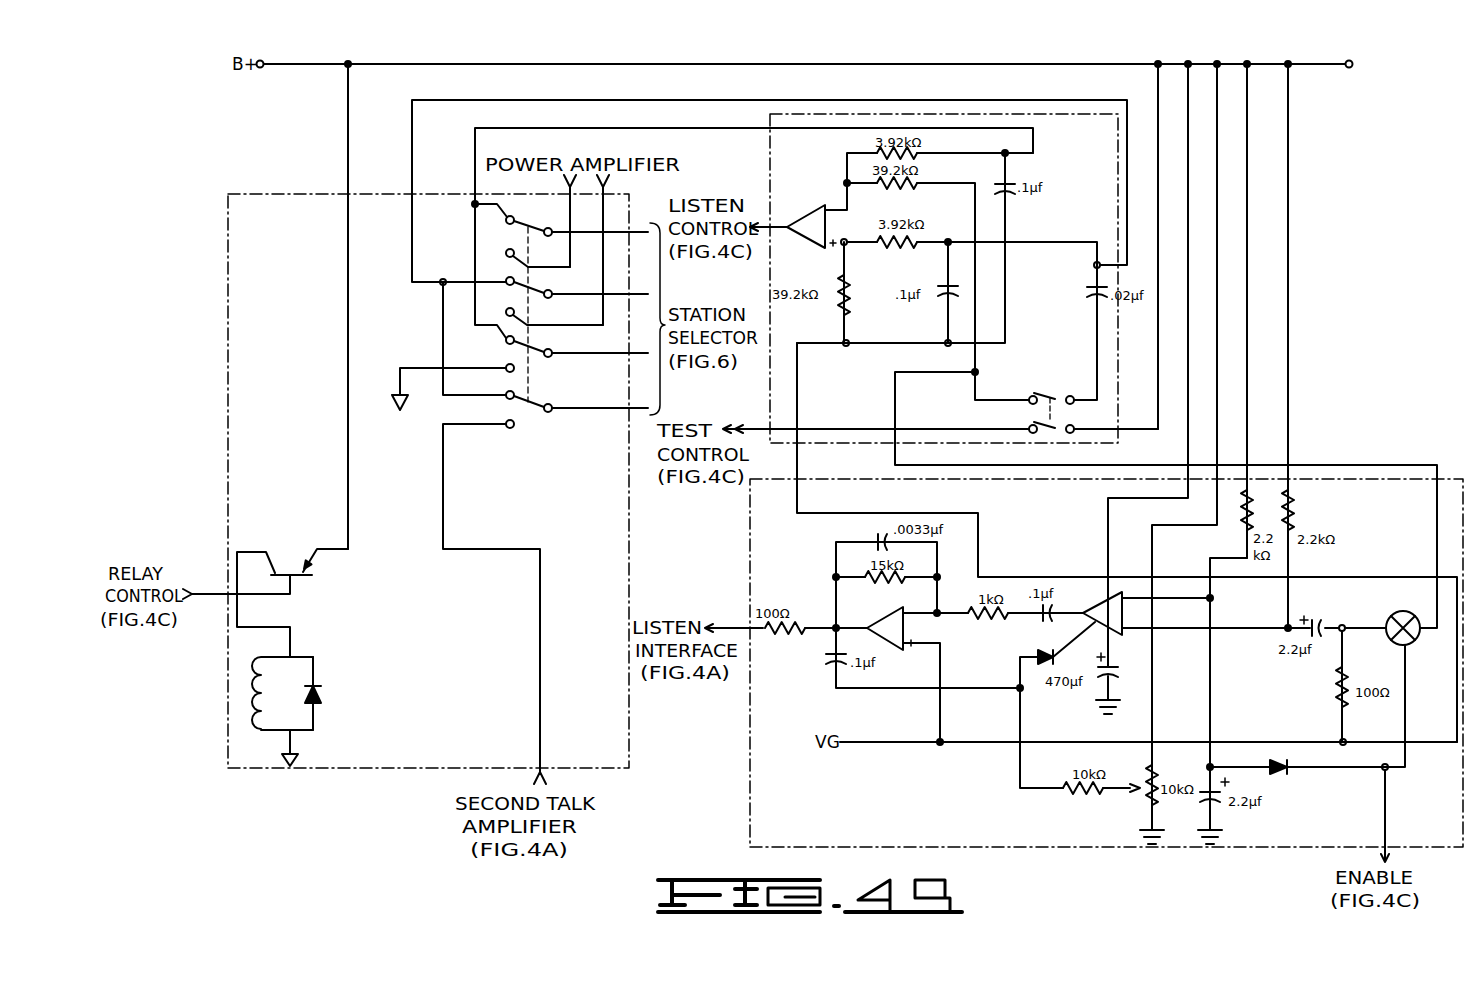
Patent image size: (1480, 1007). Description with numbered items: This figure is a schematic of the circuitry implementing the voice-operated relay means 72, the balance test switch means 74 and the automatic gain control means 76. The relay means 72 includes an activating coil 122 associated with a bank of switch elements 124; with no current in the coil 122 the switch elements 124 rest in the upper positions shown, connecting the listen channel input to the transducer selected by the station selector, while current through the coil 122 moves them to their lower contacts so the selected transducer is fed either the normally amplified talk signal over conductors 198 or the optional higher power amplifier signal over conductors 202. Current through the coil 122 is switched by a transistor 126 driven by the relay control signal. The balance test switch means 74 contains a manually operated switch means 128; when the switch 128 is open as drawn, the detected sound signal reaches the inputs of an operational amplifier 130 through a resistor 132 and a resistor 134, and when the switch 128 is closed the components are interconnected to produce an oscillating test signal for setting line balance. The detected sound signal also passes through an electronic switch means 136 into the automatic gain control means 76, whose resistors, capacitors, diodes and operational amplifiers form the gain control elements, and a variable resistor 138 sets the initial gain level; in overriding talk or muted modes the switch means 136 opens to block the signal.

The voice-operated relay means 72 is at (228, 287).
The balance test switch means 74 is at (768, 170).
The automatic gain control means 76 is at (750, 767).
The activating coil 122 is at (259, 703).
The switch elements 124 is at (528, 422).
The transistor 126 is at (290, 557).
The switch means 128 is at (1050, 386).
The operational amplifier 130 is at (805, 200).
The resistor 132 is at (877, 150).
The resistor 134 is at (895, 249).
The electronic switch means 136 is at (1402, 610).
The variable resistor 138 is at (1138, 795).
The conductors 198 is at (607, 357).
The conductors 202 is at (615, 240).